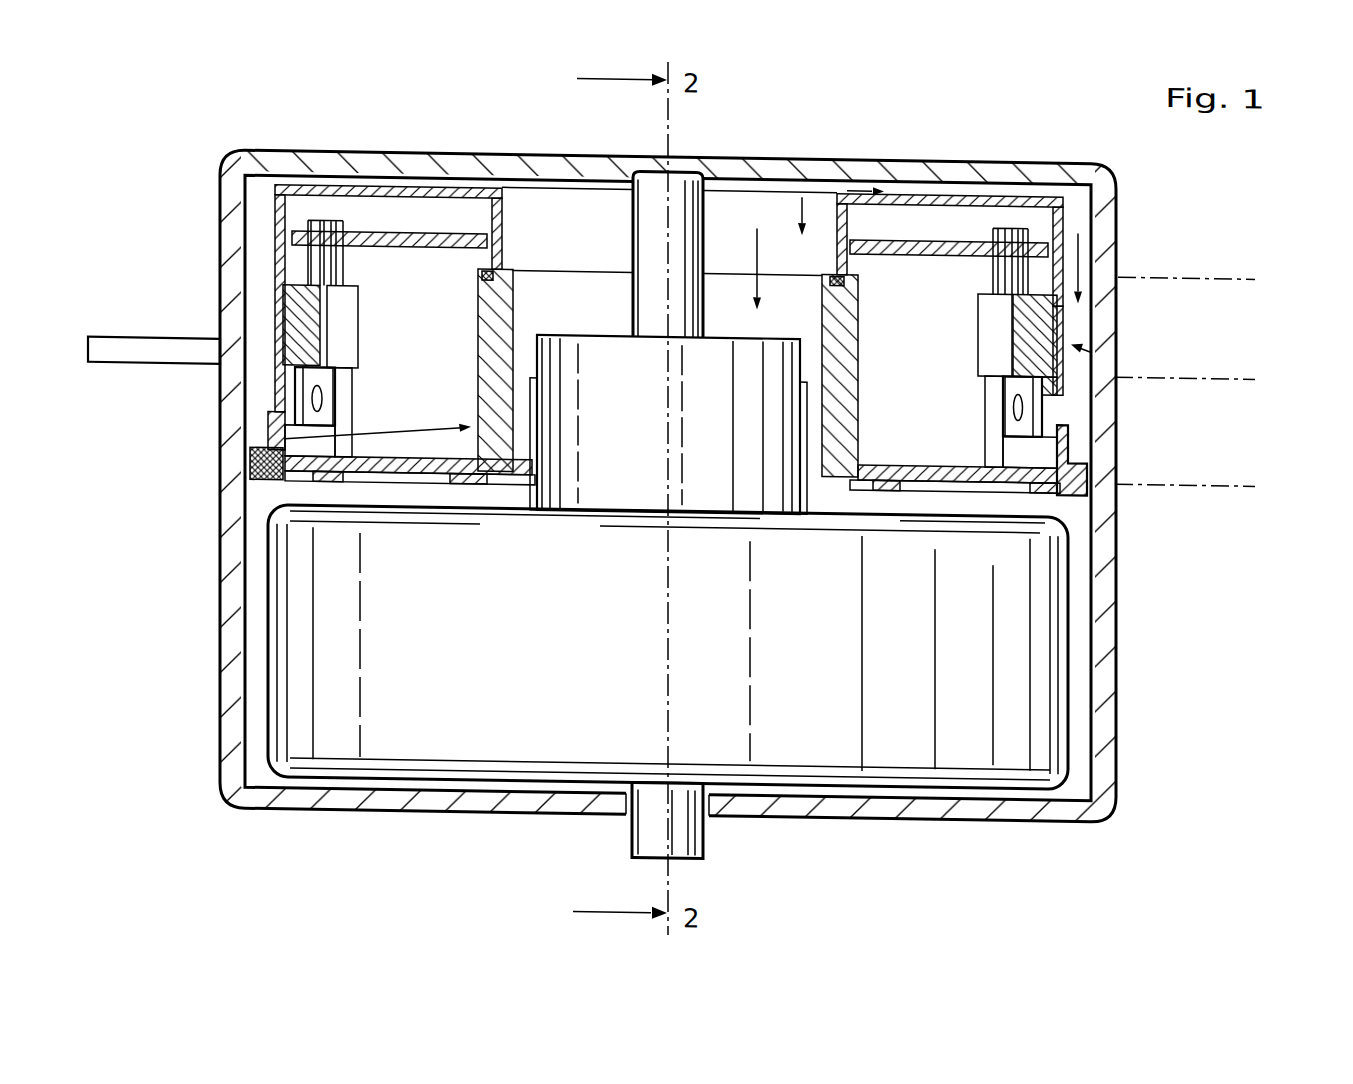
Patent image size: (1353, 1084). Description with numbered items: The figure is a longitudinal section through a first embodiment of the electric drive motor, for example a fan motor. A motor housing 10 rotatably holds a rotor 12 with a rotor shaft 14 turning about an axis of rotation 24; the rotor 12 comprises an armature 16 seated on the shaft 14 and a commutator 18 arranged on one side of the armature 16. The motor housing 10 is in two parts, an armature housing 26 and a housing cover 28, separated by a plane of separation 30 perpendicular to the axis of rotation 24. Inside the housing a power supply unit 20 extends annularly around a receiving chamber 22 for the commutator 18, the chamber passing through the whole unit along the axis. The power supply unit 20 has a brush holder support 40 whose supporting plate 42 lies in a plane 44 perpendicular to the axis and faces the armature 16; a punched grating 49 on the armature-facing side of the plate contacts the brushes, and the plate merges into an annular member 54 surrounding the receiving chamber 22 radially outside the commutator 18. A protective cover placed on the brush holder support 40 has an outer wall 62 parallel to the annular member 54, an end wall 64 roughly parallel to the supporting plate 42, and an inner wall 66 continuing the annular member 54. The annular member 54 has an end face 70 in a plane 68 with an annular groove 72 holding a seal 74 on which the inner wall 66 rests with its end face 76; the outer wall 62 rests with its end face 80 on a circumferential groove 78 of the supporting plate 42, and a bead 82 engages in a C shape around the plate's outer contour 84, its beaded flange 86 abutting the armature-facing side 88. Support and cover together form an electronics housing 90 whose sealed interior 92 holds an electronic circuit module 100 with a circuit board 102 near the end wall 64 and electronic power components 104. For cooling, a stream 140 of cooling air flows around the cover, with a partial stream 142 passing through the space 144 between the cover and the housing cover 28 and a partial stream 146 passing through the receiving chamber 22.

The motor housing 10 is at (1122, 584).
The rotor 12 is at (884, 741).
The rotor shaft 14 is at (684, 840).
The armature 16 is at (1016, 650).
The commutator 18 is at (634, 195).
The power supply unit 20 is at (1110, 346).
The receiving chamber 22 is at (772, 297).
The axis of rotation 24 is at (666, 812).
The armature housing 26 is at (1116, 728).
The housing cover 28 is at (1106, 292).
The plane of separation 30 is at (1258, 368).
The brush holder support 40 is at (268, 445).
The supporting plate 42 is at (428, 488).
The plane 44 is at (1258, 475).
The punched grating 49 is at (335, 488).
The annular member 54 is at (592, 355).
The outer wall 62 is at (345, 326).
The end wall 64 is at (360, 193).
The inner wall 66 is at (495, 245).
The plane 68 is at (1258, 268).
The end face 70 is at (838, 272).
The groove 72 is at (925, 265).
The seal 74 is at (500, 272).
The end face 76 is at (513, 268).
The groove 78 is at (300, 480).
The end face 80 is at (322, 486).
The bead 82 is at (1090, 456).
The outer contour 84 is at (262, 474).
The beaded flange 86 is at (1096, 484).
The side 88 is at (1032, 483).
The electronics housing 90 is at (1042, 188).
The interior 92 is at (298, 408).
The electronic circuit module 100 is at (963, 226).
The circuit board 102 is at (418, 240).
The electronic power components 104 is at (290, 305).
The stream of cooling air 140 is at (802, 195).
The partial stream 142 is at (852, 186).
The space 144 is at (1080, 397).
The partial stream 146 is at (757, 227).